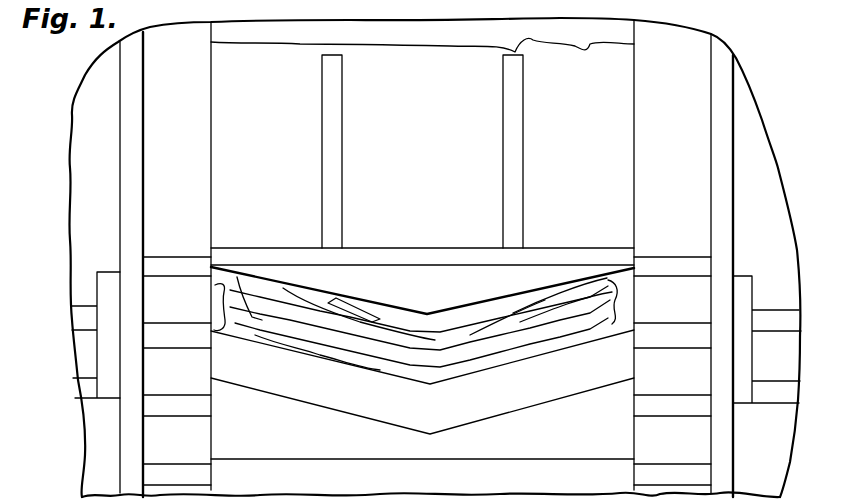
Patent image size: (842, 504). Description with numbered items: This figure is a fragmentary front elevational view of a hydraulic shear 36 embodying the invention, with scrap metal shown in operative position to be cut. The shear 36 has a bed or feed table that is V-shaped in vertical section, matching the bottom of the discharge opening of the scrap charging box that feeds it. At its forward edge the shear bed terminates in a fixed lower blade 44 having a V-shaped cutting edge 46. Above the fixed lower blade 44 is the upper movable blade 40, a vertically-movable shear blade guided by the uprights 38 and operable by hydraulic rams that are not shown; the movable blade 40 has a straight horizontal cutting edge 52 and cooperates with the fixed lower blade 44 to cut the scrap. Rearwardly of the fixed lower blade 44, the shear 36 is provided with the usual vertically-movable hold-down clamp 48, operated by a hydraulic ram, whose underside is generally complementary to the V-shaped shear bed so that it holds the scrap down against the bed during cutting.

The hydraulic shear 36 is at (786, 184).
The uprights 38 is at (211, 190).
The upper movable blade 40 is at (453, 210).
The fixed lower blade 44 is at (568, 386).
The V-shaped cutting edge 46 is at (302, 345).
The hold-down clamp 48 is at (452, 311).
The straight horizontal cutting edge 52 is at (522, 266).